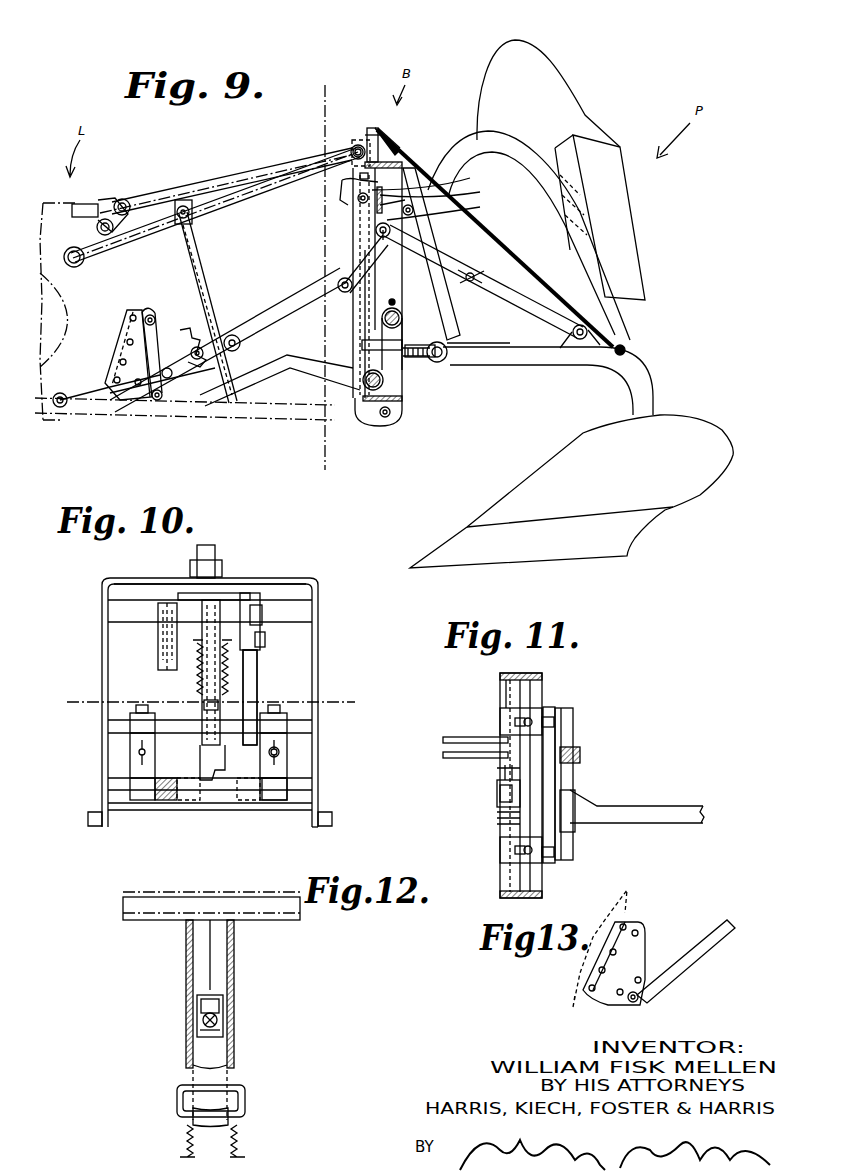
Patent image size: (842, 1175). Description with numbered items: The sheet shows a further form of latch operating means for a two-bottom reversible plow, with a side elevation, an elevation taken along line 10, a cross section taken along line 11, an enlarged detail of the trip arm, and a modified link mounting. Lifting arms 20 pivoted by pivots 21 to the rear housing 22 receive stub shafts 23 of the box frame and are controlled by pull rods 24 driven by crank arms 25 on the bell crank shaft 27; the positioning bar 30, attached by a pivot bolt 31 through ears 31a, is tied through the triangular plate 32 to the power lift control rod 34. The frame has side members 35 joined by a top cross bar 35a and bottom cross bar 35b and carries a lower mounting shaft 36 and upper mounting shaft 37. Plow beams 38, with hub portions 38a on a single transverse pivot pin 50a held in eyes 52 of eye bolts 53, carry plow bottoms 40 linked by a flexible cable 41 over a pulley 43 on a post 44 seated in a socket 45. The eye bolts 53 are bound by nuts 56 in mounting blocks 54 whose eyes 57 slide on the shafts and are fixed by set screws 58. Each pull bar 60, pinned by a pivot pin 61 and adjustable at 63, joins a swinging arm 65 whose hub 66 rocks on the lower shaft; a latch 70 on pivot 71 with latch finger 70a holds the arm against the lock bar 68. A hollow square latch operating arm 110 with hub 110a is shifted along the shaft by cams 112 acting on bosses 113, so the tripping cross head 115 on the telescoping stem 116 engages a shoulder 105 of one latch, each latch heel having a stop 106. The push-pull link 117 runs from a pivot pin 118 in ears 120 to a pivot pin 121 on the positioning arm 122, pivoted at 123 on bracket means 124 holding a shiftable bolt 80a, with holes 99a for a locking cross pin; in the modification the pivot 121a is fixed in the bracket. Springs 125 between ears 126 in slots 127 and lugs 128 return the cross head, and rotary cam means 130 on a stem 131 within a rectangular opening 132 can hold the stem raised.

In FIG. 9, the section line 10— 10 is at (344, 81).
In FIG. 10, the section line 11— 11 is at (351, 712).
In FIG. 9, the lifting arms 20 is at (302, 418).
In FIG. 9, the pivots 21 is at (58, 408).
In FIG. 9, the rear housing 22 is at (42, 403).
In FIG. 13, the rear housing 22 is at (585, 965).
In FIG. 9, the stub shafts 23 is at (385, 418).
In FIG. 9, the pull rods 24 is at (203, 240).
In FIG. 9, the crank arms 25 is at (145, 232).
In FIG. 9, the bell crank shaft 27 is at (78, 266).
In FIG. 9, the positioning bar 30 is at (255, 164).
In FIG. 9, the pivot bolt 31 is at (355, 150).
In FIG. 9, the ears 31a is at (358, 148).
In FIG. 9, the triangular plate 32 is at (112, 198).
In FIG. 9, the power lift control rod 34 is at (98, 200).
In FIG. 9, the side members 35 is at (405, 395).
In FIG. 10, the side members 35 is at (102, 640).
In FIG. 11, the side members 35 is at (542, 675).
In FIG. 10, the top cross bar 35a is at (270, 583).
In FIG. 9, the bottom cross bar 35b is at (403, 405).
In FIG. 10, the bottom cross bar 35b is at (102, 827).
In FIG. 9, the lower mounting shaft 36 is at (368, 392).
In FIG. 10, the lower mounting shaft 36 is at (108, 792).
In FIG. 11, the lower mounting shaft 36 is at (510, 690).
In FIG. 9, the upper mounting shaft 37 is at (400, 312).
In FIG. 10, the upper mounting shaft 37 is at (300, 720).
In FIG. 11, the upper mounting shaft 37 is at (515, 897).
In FIG. 9, the plow beams 38 is at (500, 140).
In FIG. 11, the plow beams 38 is at (582, 757).
In FIG. 11, the hub portions 38a is at (578, 780).
In FIG. 9, the plow bottoms 40 is at (575, 100).
In FIG. 9, the flexible cable 41 is at (563, 290).
In FIG. 9, the pulley 43 is at (385, 128).
In FIG. 9, the post 44 is at (370, 130).
In FIG. 10, the post 44 is at (215, 555).
In FIG. 9, the socket 45 is at (352, 153).
In FIG. 11, the transverse pivot pin 50a is at (575, 718).
In FIG. 9, the eyes 52 is at (448, 345).
In FIG. 11, the eyes 52 is at (560, 710).
In FIG. 9, the eye bolts 53 is at (420, 360).
In FIG. 10, the eye bolts 53 is at (280, 752).
In FIG. 11, the eye bolts 53 is at (545, 718).
In FIG. 9, the mounting blocks 54 is at (405, 375).
In FIG. 10, the mounting blocks 54 is at (130, 750).
In FIG. 11, the mounting blocks 54 is at (503, 865).
In FIG. 9, the nuts 56 is at (412, 335).
In FIG. 10, the eyes 57 is at (280, 800).
In FIG. 9, the set screws 58 is at (390, 300).
In FIG. 9, the pull bar 60 is at (300, 283).
In FIG. 10, the pull bar 60 is at (262, 645).
In FIG. 9, the pivot pin 61 is at (578, 342).
In FIG. 9, the adjustable connection 63 is at (480, 290).
In FIG. 9, the swinging arm 65 is at (282, 385).
In FIG. 10, the swinging arm 65 is at (160, 640).
In FIG. 11, the swinging arm 65 is at (478, 745).
In FIG. 10, the hub 66 is at (252, 800).
In FIG. 9, the lock bar 68 is at (432, 210).
In FIG. 10, the lock bar 68 is at (110, 603).
In FIG. 9, the latch 70 is at (212, 320).
In FIG. 10, the latch 70 is at (262, 594).
In FIG. 9, the latch finger 70a is at (432, 196).
In FIG. 9, the pivot 71 is at (236, 335).
In FIG. 9, the shiftable bolt 80a is at (162, 395).
In FIG. 9, the holes 99a is at (120, 398).
In FIG. 9, the upstanding shoulder 105 is at (197, 362).
In FIG. 9, the stop 106 is at (358, 200).
In FIG. 10, the stop 106 is at (262, 610).
In FIG. 9, the latch operating arm 110 is at (378, 229).
In FIG. 10, the latch operating arm 110 is at (200, 722).
In FIG. 11, the latch operating arm 110 is at (497, 800).
In FIG. 12, the latch operating arm 110 is at (188, 985).
In FIG. 10, the hub 110a is at (222, 805).
In FIG. 10, the cams 112 is at (180, 778).
In FIG. 11, the cams 112 is at (497, 758).
In FIG. 10, the bosses 113 is at (190, 795).
In FIG. 11, the bosses 113 is at (497, 772).
In FIG. 9, the tripping cross head 115 is at (400, 165).
In FIG. 10, the tripping cross head 115 is at (235, 590).
In FIG. 12, the tripping cross head 115 is at (265, 910).
In FIG. 11, the stem 116 is at (500, 790).
In FIG. 12, the stem 116 is at (218, 985).
In FIG. 9, the push-pull link 117 is at (290, 368).
In FIG. 10, the push-pull link 117 is at (250, 705).
In FIG. 13, the push-pull link 117 is at (700, 962).
In FIG. 9, the pivot pin 118 is at (347, 290).
In FIG. 9, the ears 120 is at (350, 275).
In FIG. 9, the pivot pin 121 is at (148, 405).
In FIG. 13, the pivot 121a is at (645, 998).
In FIG. 9, the positioning arm 122 is at (125, 352).
In FIG. 9, the pivot 123 is at (145, 312).
In FIG. 9, the bracket means 124 is at (160, 318).
In FIG. 13, the bracket means 124 is at (600, 1000).
In FIG. 10, the springs 125 is at (196, 680).
In FIG. 12, the springs 125 is at (245, 1150).
In FIG. 10, the ears 126 is at (160, 668).
In FIG. 12, the ears 126 is at (247, 1100).
In FIG. 12, the slots 127 is at (173, 1076).
In FIG. 10, the lugs 128 is at (200, 705).
In FIG. 12, the rotary cam means 130 is at (222, 1015).
In FIG. 12, the stem 131 is at (220, 1025).
In FIG. 12, the rectangular opening 132 is at (215, 1033).